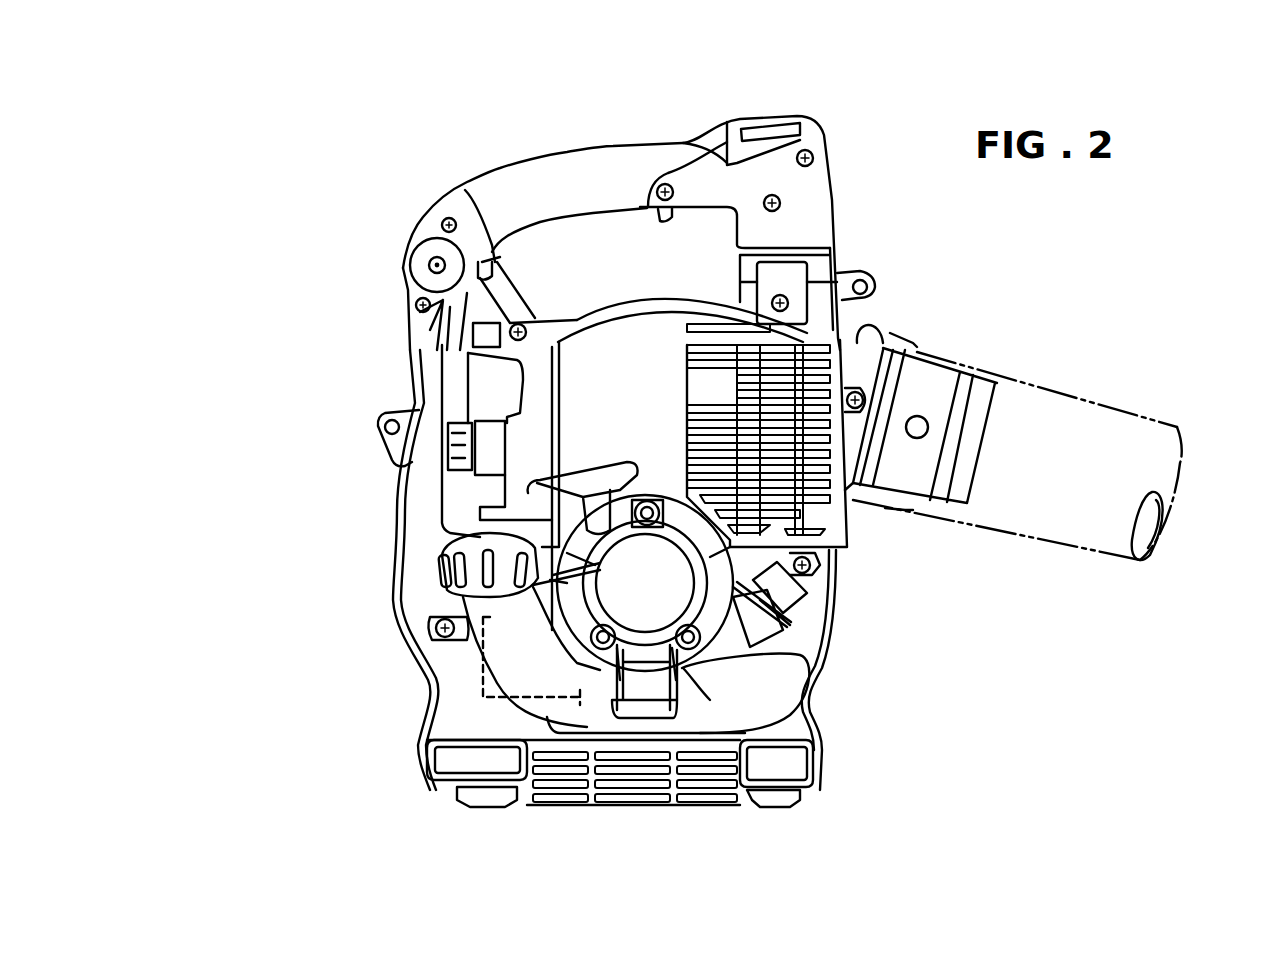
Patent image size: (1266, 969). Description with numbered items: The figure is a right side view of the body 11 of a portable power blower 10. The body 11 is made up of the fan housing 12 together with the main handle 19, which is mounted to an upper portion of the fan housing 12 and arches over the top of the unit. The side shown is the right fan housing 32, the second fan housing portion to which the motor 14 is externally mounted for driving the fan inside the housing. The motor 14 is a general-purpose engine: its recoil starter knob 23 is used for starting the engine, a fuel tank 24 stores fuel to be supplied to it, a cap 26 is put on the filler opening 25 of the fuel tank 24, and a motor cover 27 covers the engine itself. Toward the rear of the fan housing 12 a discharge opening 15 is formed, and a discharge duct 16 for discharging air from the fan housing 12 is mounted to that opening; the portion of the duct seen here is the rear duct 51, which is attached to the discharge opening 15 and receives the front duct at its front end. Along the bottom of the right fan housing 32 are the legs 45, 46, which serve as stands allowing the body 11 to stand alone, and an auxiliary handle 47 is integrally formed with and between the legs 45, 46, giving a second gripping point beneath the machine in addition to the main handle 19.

The power blower 10 is at (312, 140).
The body 11 is at (875, 605).
The fan housing 12 is at (362, 497).
The motor 14 is at (480, 620).
The discharge opening 15 is at (973, 488).
The discharge duct 16 is at (1147, 400).
The main handle 19 is at (548, 138).
The recoil starter knob 23 is at (567, 480).
The fuel tank 24 is at (767, 653).
The filler opening 25 is at (455, 603).
The cap 26 is at (440, 573).
The motor cover 27 is at (812, 330).
The right fan housing 32 is at (393, 527).
The leg 45 is at (778, 808).
The leg 46 is at (487, 808).
The auxiliary handle 47 is at (637, 775).
The rear duct 51 is at (1095, 406).